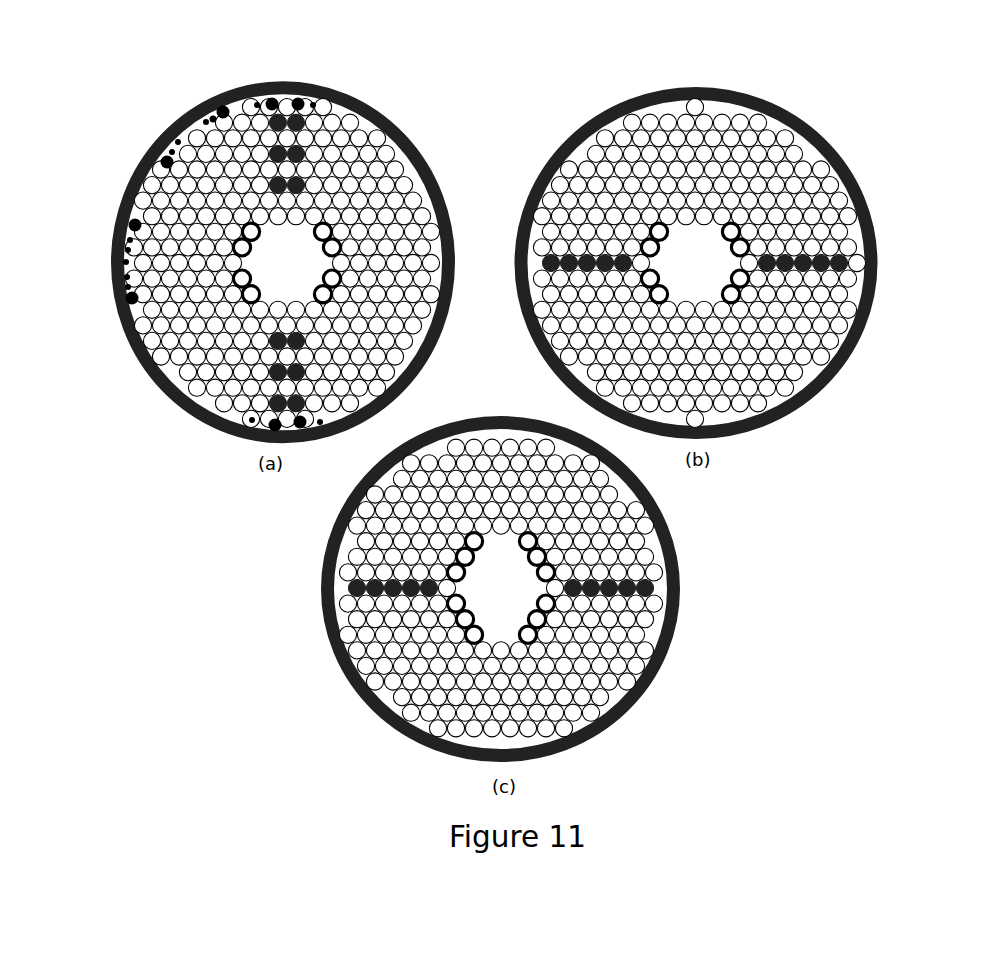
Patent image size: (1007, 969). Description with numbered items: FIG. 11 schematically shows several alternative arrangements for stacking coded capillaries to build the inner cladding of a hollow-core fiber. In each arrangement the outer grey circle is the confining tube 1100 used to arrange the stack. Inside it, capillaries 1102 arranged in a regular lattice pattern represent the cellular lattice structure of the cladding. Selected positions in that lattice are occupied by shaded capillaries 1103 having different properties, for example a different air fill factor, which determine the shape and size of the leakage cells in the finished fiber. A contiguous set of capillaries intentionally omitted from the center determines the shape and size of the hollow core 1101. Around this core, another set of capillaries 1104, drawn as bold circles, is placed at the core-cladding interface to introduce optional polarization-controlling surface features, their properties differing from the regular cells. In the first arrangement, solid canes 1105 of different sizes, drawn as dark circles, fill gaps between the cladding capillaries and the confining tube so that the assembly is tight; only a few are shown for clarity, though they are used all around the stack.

The confining tube 1100 is at (143, 350).
The hollow core 1101 is at (491, 427).
The capillaries 1102 is at (423, 188).
The substituted capillaries 1103 is at (253, 101).
The surface feature capillaries 1104 is at (327, 294).
The solid canes 1105 is at (317, 100).